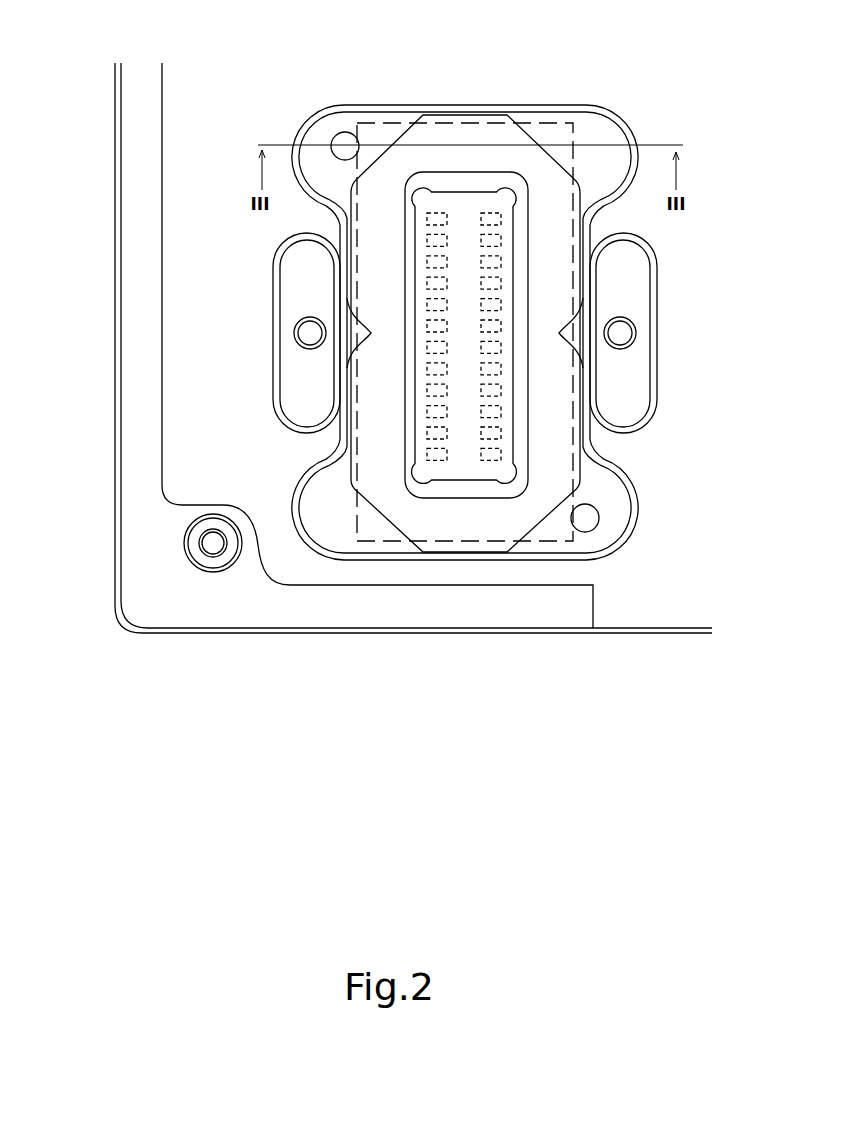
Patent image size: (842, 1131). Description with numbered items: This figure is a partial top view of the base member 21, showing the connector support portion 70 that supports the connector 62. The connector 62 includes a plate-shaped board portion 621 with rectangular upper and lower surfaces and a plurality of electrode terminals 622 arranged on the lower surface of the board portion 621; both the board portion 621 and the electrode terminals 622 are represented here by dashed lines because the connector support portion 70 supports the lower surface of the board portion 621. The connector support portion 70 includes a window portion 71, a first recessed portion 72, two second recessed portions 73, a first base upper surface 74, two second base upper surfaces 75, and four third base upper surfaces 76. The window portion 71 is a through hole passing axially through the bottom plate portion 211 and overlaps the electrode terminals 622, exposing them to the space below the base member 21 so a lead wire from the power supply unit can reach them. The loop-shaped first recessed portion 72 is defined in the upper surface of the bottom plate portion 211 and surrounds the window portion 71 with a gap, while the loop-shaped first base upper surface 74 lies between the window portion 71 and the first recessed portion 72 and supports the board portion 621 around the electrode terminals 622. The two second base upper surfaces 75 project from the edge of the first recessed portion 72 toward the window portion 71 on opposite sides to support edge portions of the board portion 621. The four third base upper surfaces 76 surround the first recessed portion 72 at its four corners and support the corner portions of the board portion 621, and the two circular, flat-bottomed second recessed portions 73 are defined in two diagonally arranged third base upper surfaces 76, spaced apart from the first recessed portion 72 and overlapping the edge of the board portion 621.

The base member 21 is at (474, 764).
The bottom plate portion 211 is at (607, 620).
The connector support portion 70 is at (488, 70).
The window portion 71 is at (426, 469).
The first recessed portion 72 is at (386, 393).
The second recessed portion 73 is at (332, 142).
The first base upper surface 74 is at (520, 383).
The second base upper surface 75 is at (365, 333).
The third base upper surface 76 is at (322, 118).
The connector 62 is at (469, 111).
The board portion 621 is at (382, 107).
The electrode terminal 622 is at (485, 203).